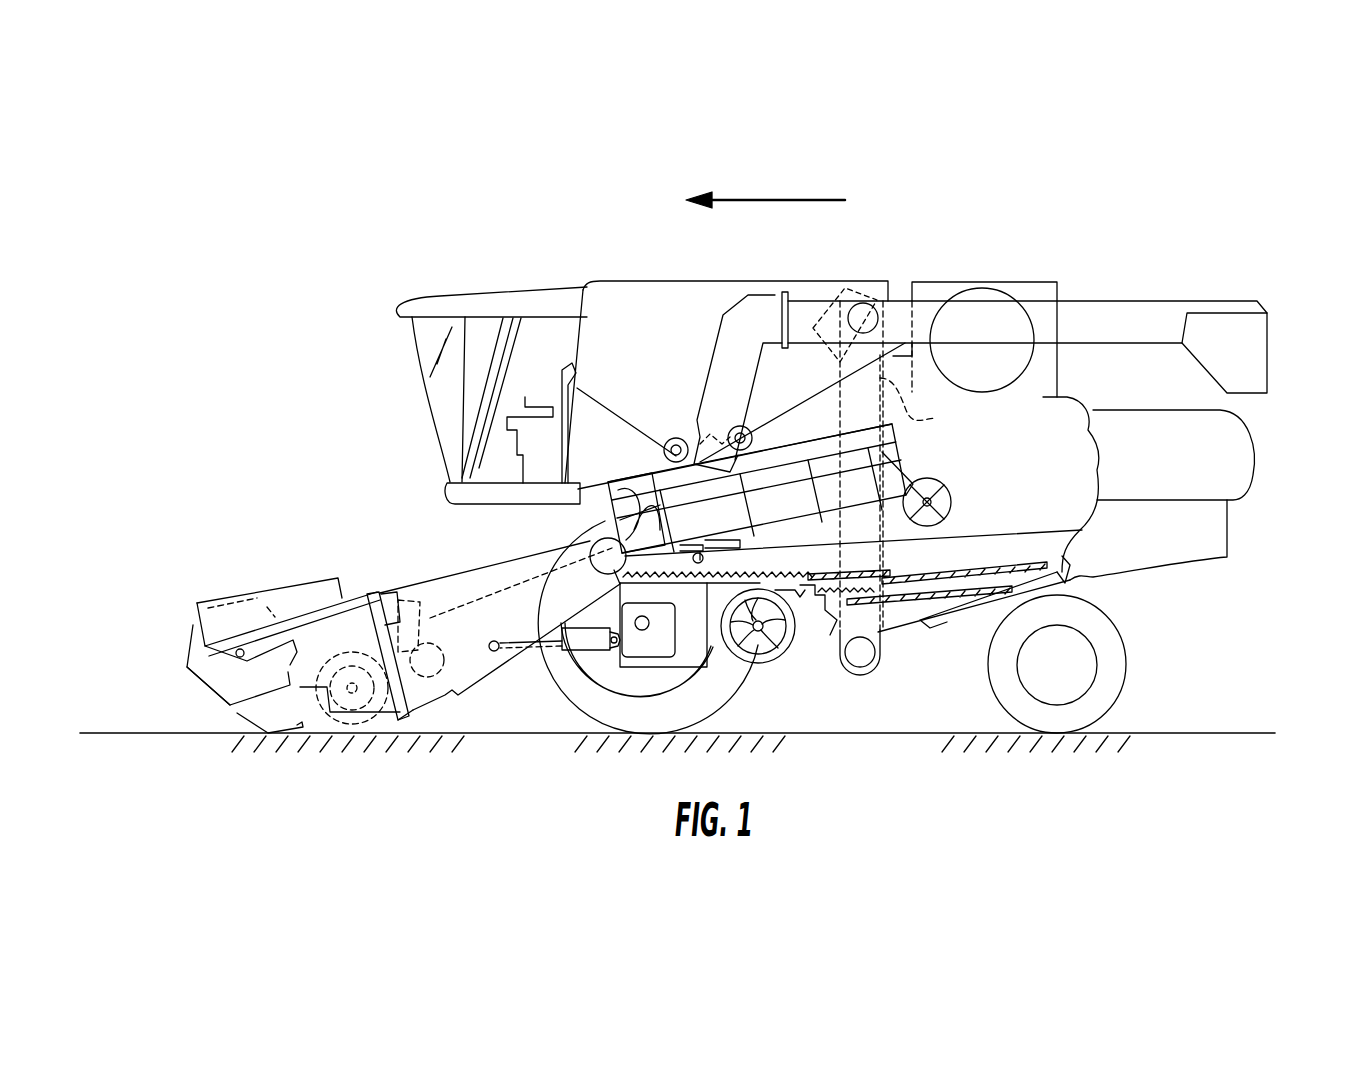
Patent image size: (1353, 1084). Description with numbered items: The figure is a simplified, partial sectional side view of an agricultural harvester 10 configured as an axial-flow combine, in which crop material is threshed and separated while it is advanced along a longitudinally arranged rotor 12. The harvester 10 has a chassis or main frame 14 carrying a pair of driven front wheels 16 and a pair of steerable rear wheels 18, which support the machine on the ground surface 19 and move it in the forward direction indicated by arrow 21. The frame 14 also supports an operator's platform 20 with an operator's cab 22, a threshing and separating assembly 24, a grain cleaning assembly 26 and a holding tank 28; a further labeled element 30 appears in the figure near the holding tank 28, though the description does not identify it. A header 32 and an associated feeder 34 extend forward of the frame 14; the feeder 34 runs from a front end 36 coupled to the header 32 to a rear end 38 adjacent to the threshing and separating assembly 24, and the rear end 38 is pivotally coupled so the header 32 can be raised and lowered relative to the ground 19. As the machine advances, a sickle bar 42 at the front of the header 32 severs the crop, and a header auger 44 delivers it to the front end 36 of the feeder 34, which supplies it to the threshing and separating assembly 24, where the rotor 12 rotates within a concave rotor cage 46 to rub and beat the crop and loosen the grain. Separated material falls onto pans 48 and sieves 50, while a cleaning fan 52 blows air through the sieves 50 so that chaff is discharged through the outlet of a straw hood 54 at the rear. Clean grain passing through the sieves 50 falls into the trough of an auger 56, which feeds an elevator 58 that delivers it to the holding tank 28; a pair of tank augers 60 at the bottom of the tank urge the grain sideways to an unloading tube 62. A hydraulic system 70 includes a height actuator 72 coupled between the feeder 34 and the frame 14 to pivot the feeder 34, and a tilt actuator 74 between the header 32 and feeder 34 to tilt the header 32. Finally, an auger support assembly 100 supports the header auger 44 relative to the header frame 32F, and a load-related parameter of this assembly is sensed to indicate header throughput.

The agricultural harvester 10 is at (455, 243).
The rotor 12 is at (630, 480).
The chassis or main frame 14 is at (1070, 583).
The front wheels 16 is at (583, 705).
The rear wheels 18 is at (1117, 680).
The ground surface 19 is at (180, 733).
The operator's platform 20 is at (460, 497).
The arrow 21 is at (778, 199).
The operator's cab 22 is at (438, 396).
The threshing and separating assembly 24 is at (752, 480).
The grain cleaning assembly 26 is at (826, 664).
The holding tank 28 is at (667, 280).
The grain tank unloading auger 30 is at (962, 292).
The header 32 is at (258, 584).
The frame of the header 32F is at (400, 719).
The feeder 34 is at (435, 576).
The front end of the feeder 36 is at (373, 638).
The rear end of the feeder 38 is at (587, 523).
The sickle bar 42 is at (240, 725).
The header auger 44 is at (357, 705).
The concave rotor cage 46 is at (803, 443).
The pans 48 is at (760, 580).
The sieves 50 is at (900, 578).
The cleaning fan 52 is at (762, 653).
The straw hood 54 is at (1243, 470).
The auger 56 is at (860, 662).
The elevator 58 is at (922, 452).
The tank augers 60 is at (735, 428).
The unloading tube 62 is at (1110, 313).
The hydraulic system 70 is at (450, 693).
The height actuator 72 is at (545, 650).
The tilt actuator 74 is at (446, 700).
The auger support assembly 100 is at (345, 703).